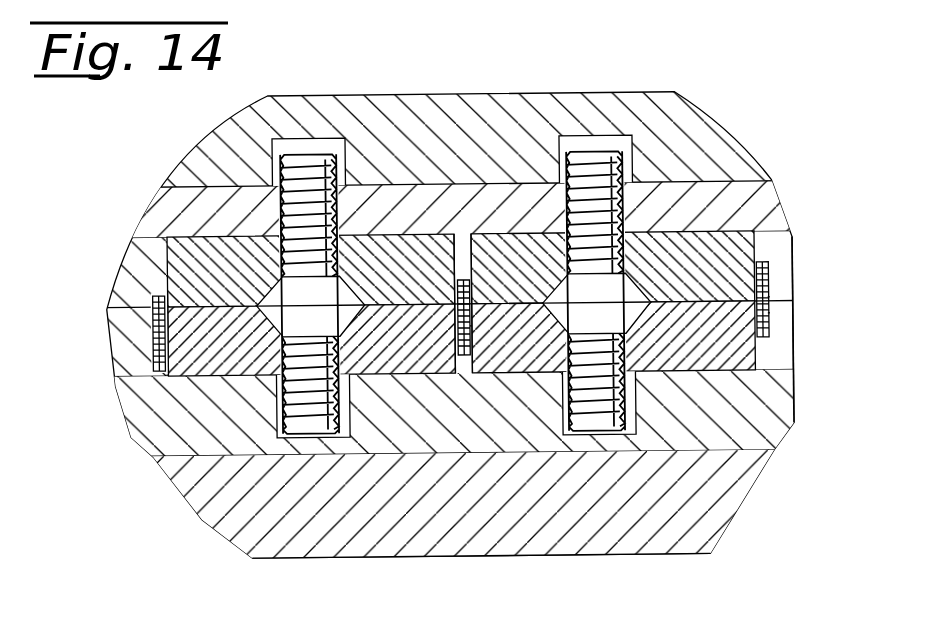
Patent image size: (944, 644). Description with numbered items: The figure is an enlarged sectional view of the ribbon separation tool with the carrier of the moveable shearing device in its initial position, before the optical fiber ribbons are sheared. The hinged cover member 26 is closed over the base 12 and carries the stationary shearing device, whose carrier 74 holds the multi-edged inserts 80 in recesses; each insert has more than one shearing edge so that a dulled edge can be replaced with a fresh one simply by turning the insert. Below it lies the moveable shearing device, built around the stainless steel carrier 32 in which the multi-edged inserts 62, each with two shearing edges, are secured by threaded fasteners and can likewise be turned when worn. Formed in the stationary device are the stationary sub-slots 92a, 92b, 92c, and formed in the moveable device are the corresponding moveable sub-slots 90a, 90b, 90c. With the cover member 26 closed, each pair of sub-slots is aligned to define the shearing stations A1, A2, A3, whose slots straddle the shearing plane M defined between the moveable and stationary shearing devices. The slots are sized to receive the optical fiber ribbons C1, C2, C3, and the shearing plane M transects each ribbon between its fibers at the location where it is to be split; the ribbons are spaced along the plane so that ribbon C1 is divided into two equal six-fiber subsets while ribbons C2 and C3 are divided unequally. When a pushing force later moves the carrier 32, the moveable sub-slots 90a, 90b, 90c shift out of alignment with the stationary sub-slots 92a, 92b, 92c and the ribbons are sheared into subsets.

The base 12 is at (622, 565).
The cover member 26 is at (560, 90).
The carrier 32 is at (777, 420).
The multi-edged inserts 62 is at (703, 358).
The carrier 74 is at (738, 196).
The multi-edged inserts 80 is at (752, 222).
The moveable sub-slot 90a is at (772, 318).
The moveable sub-slot 90b is at (465, 358).
The moveable sub-slot 90c is at (150, 368).
The stationary sub-slot 92a is at (768, 272).
The stationary sub-slot 92b is at (465, 280).
The stationary sub-slot 92c is at (152, 298).
The shearing station A1 is at (768, 254).
The shearing station A2 is at (455, 224).
The shearing station A3 is at (155, 285).
The ribbon C1 is at (768, 316).
The ribbon C2 is at (470, 326).
The ribbon C3 is at (172, 374).
The shearing plane M is at (768, 300).